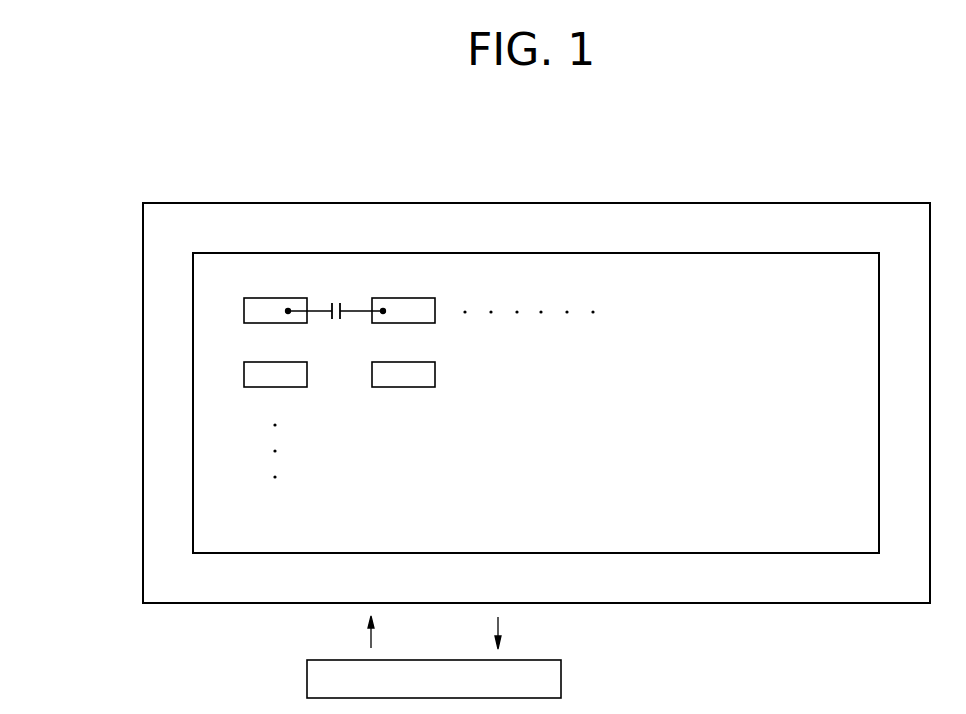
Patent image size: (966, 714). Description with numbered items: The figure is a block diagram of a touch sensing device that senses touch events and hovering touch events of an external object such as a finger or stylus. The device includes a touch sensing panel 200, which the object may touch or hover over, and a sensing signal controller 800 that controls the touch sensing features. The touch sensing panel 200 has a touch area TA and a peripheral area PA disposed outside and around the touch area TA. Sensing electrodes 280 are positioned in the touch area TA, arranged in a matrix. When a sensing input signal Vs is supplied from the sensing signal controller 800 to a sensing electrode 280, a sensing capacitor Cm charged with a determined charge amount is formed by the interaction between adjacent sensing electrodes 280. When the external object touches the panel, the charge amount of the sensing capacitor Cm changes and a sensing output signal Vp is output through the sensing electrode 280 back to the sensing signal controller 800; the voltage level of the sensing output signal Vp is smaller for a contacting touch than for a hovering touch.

The touch sensing panel 200 is at (636, 196).
The touch area TA is at (527, 292).
The peripheral area PA is at (162, 288).
The sensing electrode 280 is at (284, 298).
The sensing capacitor Cm is at (336, 298).
The sensing signal controller 800 is at (561, 683).
The sensing input signal Vs is at (357, 632).
The sensing output signal Vp is at (515, 633).